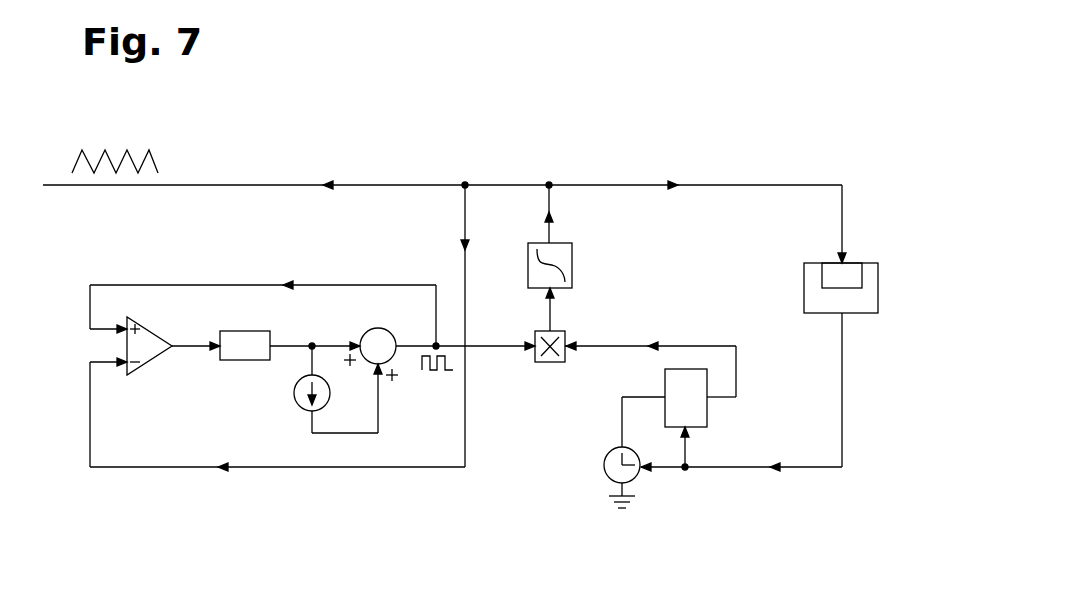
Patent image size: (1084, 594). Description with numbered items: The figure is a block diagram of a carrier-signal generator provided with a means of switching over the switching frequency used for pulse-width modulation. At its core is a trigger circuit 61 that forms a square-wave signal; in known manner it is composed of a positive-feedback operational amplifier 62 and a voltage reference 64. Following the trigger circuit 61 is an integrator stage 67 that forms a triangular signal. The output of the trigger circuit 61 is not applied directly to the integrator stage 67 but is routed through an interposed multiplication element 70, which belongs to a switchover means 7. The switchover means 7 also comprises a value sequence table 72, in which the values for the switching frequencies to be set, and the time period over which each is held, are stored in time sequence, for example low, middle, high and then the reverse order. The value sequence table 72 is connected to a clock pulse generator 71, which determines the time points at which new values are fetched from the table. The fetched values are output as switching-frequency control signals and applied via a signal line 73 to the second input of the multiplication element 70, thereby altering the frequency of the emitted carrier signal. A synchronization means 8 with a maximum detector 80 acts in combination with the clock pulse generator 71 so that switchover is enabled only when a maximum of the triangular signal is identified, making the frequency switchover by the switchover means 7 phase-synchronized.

The switchover means 7 is at (560, 486).
The synchronization means 8 is at (878, 300).
The maximum detector 80 is at (862, 278).
The trigger circuit 61 is at (150, 262).
The positive-feedback operational amplifier 62 is at (153, 362).
The voltage reference 64 is at (294, 393).
The integrator stage 67 is at (572, 266).
The multiplication element 70 is at (548, 362).
The clock pulse generator 71 is at (604, 467).
The value sequence table 72 is at (707, 413).
The signal line 73 is at (702, 346).